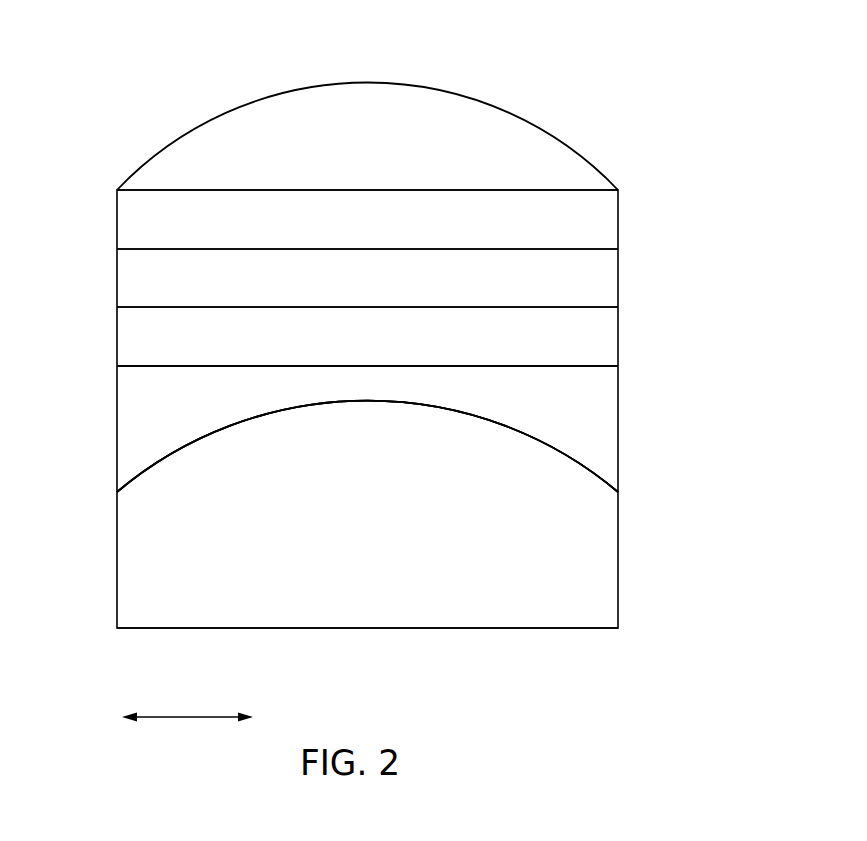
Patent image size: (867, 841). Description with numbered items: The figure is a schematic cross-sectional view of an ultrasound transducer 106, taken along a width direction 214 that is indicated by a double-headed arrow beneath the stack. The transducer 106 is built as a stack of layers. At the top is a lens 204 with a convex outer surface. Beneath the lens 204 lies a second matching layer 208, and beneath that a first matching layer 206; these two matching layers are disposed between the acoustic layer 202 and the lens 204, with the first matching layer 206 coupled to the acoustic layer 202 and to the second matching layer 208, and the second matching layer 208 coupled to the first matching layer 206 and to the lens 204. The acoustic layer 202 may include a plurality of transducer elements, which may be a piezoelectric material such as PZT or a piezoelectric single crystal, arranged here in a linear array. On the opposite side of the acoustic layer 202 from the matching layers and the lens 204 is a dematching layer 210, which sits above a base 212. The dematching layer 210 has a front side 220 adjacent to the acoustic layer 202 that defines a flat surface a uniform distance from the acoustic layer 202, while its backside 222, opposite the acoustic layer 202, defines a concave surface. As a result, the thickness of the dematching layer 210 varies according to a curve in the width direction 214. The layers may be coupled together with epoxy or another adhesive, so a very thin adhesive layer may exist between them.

The ultrasound transducer 106 is at (654, 71).
The acoustic layer 202 is at (367, 336).
The lens 204 is at (367, 136).
The first matching layer 206 is at (367, 278).
The second matching layer 208 is at (367, 219).
The dematching layer 210 is at (367, 429).
The base 212 is at (367, 514).
The width direction 214 is at (187, 714).
The front side 220 is at (153, 357).
The backside 222 is at (257, 432).